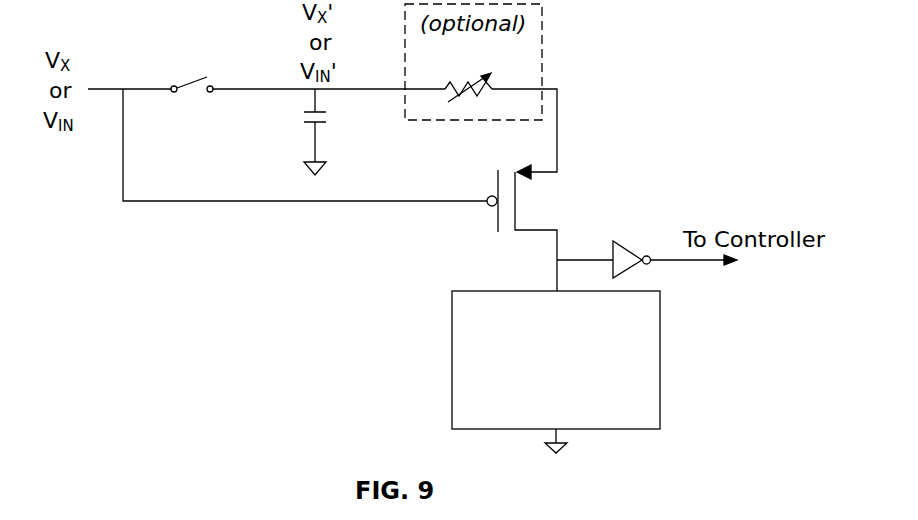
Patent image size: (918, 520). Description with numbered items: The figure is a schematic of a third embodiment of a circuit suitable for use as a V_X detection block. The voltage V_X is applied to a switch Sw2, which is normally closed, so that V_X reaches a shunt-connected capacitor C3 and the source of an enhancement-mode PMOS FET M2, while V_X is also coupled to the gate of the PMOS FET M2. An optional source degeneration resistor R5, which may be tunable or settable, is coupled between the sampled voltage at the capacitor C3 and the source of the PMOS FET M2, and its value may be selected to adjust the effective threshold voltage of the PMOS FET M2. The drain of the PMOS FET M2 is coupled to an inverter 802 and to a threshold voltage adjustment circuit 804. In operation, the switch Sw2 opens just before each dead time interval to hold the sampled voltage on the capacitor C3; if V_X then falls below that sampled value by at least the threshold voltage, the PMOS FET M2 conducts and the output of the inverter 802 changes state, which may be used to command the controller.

The inverter 802 is at (620, 240).
The threshold voltage adjustment circuit 804 is at (452, 358).
The enhancement-mode PMOS FET M2 is at (527, 228).
The switch Sw2 is at (193, 103).
The shunt-connected capacitor C3 is at (295, 132).
The source degeneration resistor R5 is at (468, 76).